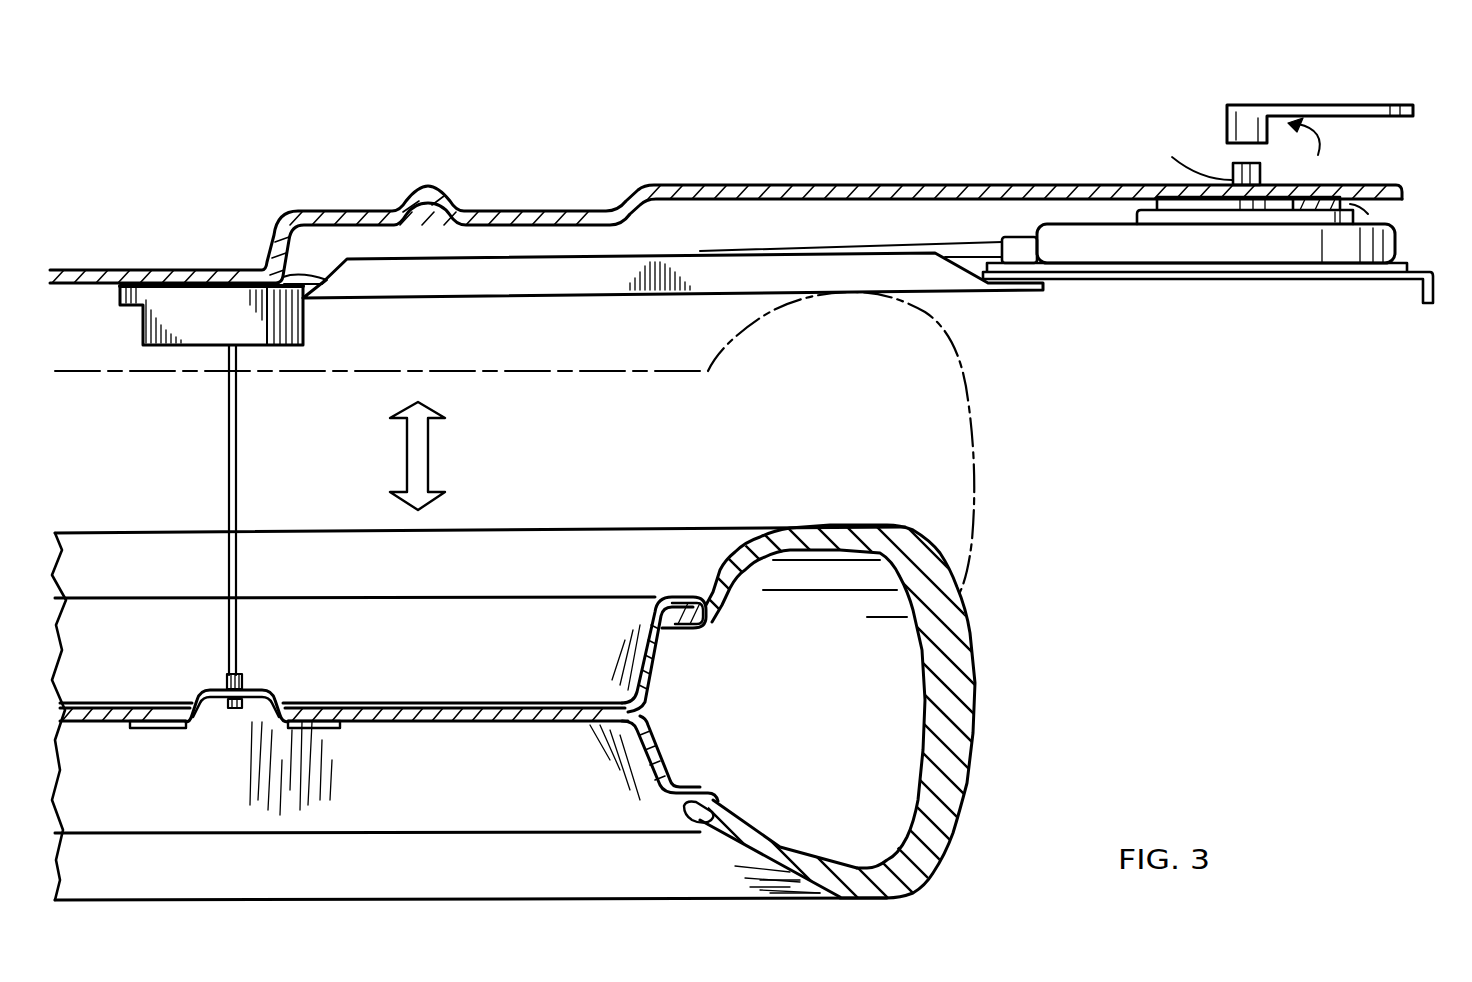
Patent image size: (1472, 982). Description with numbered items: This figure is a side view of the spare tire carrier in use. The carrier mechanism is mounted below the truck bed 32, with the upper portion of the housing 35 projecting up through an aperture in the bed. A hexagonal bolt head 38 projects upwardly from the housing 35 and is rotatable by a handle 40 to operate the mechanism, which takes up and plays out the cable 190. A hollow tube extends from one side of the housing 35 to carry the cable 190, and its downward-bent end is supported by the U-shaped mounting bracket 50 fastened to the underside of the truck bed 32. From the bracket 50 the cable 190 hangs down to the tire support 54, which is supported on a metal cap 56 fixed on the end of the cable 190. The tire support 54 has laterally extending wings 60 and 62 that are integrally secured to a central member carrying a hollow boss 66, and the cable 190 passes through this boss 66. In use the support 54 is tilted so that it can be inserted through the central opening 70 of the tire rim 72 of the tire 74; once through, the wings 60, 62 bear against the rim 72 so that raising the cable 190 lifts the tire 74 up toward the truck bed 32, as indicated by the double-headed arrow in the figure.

The truck bed 32 is at (906, 187).
The housing 35 is at (1352, 204).
The hexagonal bolt head 38 is at (1232, 163).
The handle 40 is at (1308, 108).
The U-shaped mounting bracket 50 is at (283, 323).
The tire support 54 is at (327, 728).
The metal cap 56 is at (230, 710).
The wing 60 is at (140, 728).
The wing 62 is at (287, 724).
The hollow boss 66 is at (226, 685).
The central opening 70 is at (265, 693).
The tire rim 72 is at (445, 712).
The tire 74 is at (943, 675).
The cable 190 is at (236, 463).